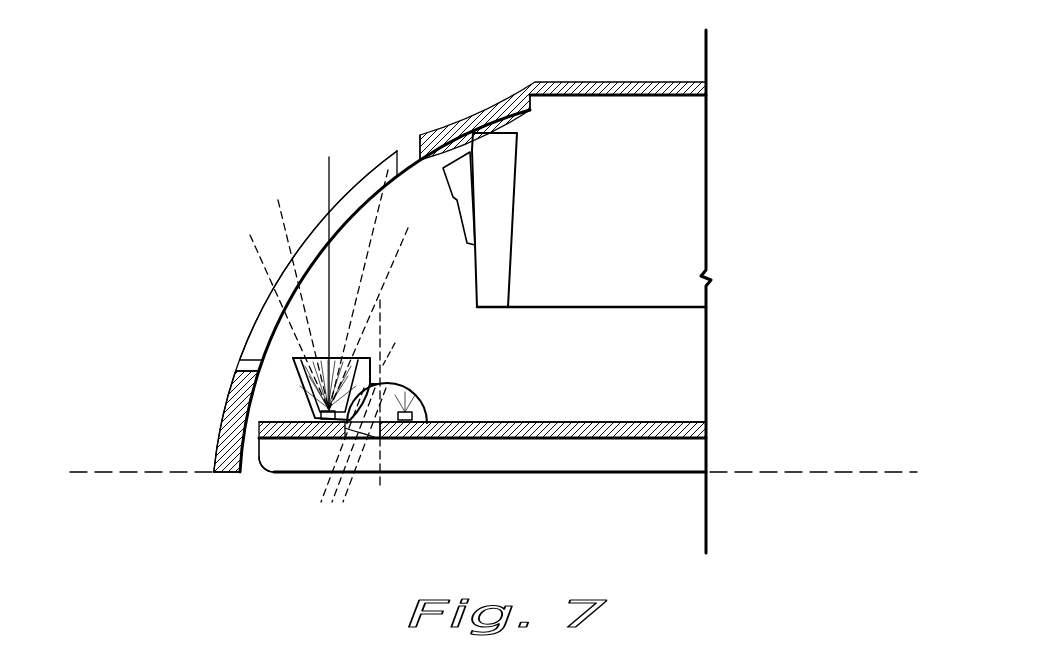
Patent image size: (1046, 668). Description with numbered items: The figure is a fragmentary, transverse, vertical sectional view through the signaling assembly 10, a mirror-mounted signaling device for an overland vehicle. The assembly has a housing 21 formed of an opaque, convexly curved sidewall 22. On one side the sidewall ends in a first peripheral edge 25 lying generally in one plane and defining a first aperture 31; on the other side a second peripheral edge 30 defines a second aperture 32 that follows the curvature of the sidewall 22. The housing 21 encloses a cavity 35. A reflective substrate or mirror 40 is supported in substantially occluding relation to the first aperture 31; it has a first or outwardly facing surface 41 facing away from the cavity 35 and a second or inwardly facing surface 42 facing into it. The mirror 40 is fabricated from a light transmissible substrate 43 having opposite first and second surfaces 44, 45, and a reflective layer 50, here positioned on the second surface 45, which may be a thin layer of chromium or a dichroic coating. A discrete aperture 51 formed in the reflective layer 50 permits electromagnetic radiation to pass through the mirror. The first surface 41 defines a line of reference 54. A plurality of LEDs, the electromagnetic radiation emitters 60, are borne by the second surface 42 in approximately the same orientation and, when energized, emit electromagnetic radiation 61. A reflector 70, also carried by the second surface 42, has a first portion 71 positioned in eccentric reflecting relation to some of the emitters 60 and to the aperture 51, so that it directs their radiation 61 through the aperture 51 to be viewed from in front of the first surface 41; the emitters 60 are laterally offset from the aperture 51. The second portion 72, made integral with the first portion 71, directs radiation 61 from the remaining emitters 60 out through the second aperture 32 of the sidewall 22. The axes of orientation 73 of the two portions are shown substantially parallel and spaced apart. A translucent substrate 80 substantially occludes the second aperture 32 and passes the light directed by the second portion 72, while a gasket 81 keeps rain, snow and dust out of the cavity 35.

The signaling assembly 10 is at (205, 183).
The housing 21 is at (588, 72).
The convexly curved sidewall 22 is at (528, 82).
The first peripheral edge 25 is at (224, 470).
The second peripheral edge 30 is at (422, 142).
The first aperture 31 is at (250, 466).
The second aperture 32 is at (270, 252).
The cavity 35 is at (523, 355).
The reflective substrate or mirror 40 is at (622, 490).
The first or outwardly facing surface 41 is at (545, 474).
The second or inwardly facing surface 42 is at (516, 420).
The light transmissible substrate 43 is at (684, 457).
The first surface 44 is at (474, 475).
The second surface 45 is at (608, 421).
The reflective layer 50 is at (688, 420).
The aperture 51 is at (330, 473).
The line of reference 54 is at (122, 478).
The electromagnetic radiation emitters 60 is at (348, 297).
The electromagnetic radiation 61 is at (393, 258).
The reflector 70 is at (265, 409).
The first portion 71 is at (393, 388).
The second portion 72 is at (293, 360).
The axes of orientation 73 is at (340, 160).
The translucent substrate 80 is at (256, 318).
The gasket 81 is at (405, 150).